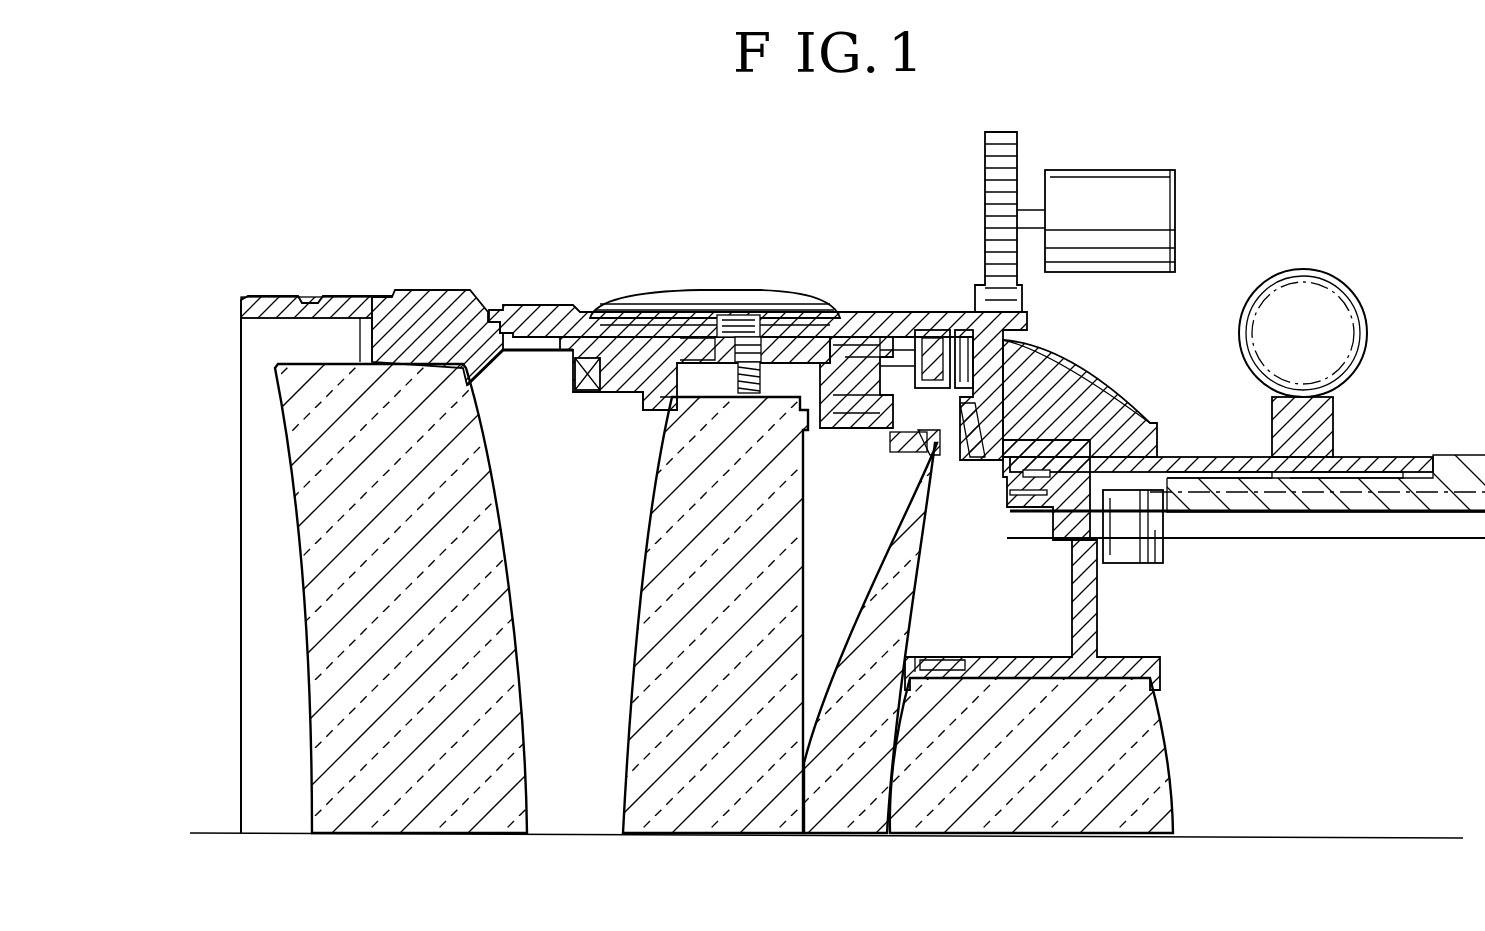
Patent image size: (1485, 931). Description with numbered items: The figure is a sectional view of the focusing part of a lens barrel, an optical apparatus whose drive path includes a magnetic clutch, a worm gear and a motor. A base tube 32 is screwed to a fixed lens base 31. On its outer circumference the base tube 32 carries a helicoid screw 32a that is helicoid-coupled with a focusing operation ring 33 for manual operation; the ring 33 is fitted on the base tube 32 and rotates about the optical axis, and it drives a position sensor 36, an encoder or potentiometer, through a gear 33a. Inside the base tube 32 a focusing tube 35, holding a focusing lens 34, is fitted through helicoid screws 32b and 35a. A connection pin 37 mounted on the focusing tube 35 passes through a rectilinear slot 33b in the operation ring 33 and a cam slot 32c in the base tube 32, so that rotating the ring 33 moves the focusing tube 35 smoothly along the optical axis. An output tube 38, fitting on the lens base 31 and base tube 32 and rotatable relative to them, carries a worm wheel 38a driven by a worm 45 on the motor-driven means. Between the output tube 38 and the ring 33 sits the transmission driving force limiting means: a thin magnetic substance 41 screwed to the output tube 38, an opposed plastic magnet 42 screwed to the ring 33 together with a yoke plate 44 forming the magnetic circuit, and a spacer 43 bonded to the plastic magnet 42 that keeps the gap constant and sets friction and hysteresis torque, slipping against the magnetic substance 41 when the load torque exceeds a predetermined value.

The fixed lens base 31 is at (1450, 465).
The base tube 32 is at (430, 305).
The helicoid screw 32a is at (700, 335).
The helicoid screw 32b is at (600, 395).
The cam slot 32c is at (790, 340).
The focusing operation ring 33 is at (870, 330).
The gear 33a is at (1020, 290).
The rectilinear slot 33b is at (635, 325).
The focusing lens 34 is at (845, 800).
The focusing tube 35 is at (845, 340).
The helicoid screw 35a is at (672, 338).
The position sensor 36 is at (1115, 195).
The connection pin 37 is at (755, 330).
The output tube 38 is at (1128, 435).
The worm wheel 38a is at (1290, 420).
The magnetic substance 41 is at (960, 440).
The plastic magnet 42 is at (938, 456).
The spacer 43 is at (950, 335).
The yoke plate 44 is at (925, 330).
The worm 45 is at (1293, 300).